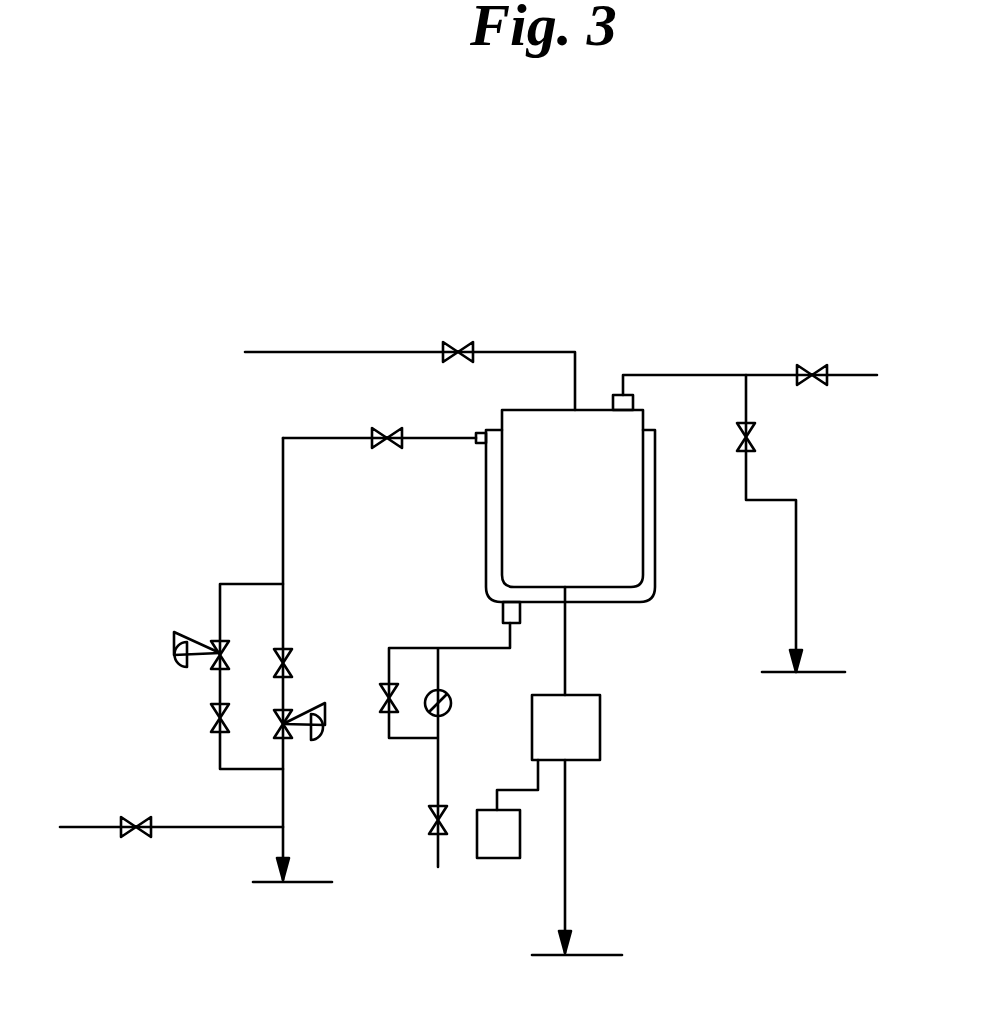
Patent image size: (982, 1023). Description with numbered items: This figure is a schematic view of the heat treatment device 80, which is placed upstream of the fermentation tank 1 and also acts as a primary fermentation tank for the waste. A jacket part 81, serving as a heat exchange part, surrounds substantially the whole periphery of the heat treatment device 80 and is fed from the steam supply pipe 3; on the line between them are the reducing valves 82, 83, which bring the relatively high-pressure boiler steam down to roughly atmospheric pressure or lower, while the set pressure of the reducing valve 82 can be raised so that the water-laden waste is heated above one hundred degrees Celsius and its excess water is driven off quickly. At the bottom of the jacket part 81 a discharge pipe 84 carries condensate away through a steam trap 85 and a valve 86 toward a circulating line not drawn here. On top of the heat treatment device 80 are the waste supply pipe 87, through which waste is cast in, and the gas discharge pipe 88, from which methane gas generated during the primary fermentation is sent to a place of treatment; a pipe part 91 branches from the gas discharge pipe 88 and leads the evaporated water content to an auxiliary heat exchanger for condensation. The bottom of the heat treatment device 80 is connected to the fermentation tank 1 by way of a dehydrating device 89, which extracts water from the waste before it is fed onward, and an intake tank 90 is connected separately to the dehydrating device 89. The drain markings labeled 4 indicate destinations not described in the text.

The fermentation tank 1 is at (583, 958).
The steam supply pipe 3 is at (92, 827).
The drain / vent destination 4 is at (313, 884).
The heat treatment device 80 is at (620, 620).
The jacket part 81 is at (652, 553).
The reducing valve 82 is at (218, 648).
The reducing valve 83 is at (292, 733).
The discharge pipe 84 is at (471, 648).
The steam trap 85 is at (452, 700).
The valve 86 is at (382, 692).
The waste supply pipe 87 is at (373, 352).
The gas discharge pipe 88 is at (690, 375).
The dehydrating device 89 is at (578, 732).
The intake tank 90 is at (505, 857).
The pipe part 91 is at (750, 406).